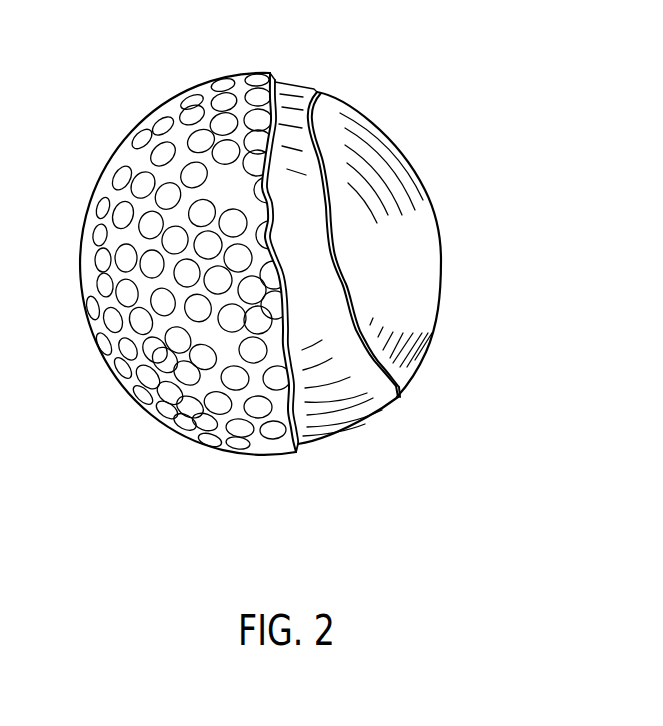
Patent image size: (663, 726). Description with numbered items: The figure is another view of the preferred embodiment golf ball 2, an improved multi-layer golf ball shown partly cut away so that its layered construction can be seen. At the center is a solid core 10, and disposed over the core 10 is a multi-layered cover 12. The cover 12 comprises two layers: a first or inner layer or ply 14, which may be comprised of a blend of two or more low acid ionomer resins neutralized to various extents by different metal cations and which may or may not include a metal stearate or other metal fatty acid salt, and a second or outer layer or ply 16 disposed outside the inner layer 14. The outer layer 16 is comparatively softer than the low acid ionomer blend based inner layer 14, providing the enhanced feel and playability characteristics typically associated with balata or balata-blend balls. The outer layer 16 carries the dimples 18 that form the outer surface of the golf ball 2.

The golf ball 2 is at (476, 140).
The core 10 is at (360, 113).
The cover 12 is at (318, 86).
The inner layer 14 is at (372, 418).
The outer layer 16 is at (118, 382).
The dimples 18 is at (118, 148).